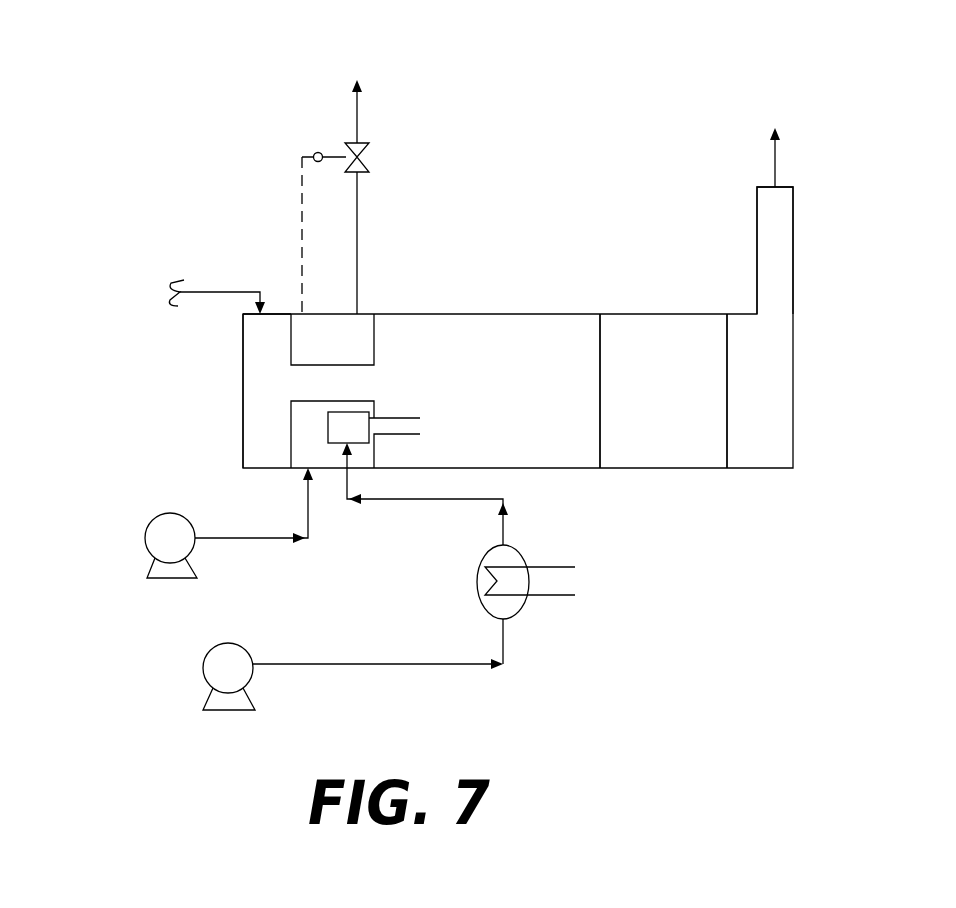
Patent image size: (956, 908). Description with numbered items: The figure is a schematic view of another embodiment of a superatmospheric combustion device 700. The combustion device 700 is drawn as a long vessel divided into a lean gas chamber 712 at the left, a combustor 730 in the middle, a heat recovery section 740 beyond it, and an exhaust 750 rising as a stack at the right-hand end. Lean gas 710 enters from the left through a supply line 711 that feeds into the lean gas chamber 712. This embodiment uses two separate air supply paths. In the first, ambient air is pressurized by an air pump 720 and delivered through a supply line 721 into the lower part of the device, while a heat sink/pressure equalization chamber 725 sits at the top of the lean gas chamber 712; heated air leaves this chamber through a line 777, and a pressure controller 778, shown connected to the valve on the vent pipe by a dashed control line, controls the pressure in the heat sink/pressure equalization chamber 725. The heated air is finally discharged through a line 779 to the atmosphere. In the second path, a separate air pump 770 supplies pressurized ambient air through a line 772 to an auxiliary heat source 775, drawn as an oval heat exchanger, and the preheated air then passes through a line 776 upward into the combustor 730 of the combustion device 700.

The combustion device 700 is at (600, 314).
The lean gas 710 is at (132, 292).
The supply line 711 is at (202, 292).
The lean gas chamber 712 is at (253, 352).
The air pump 720 is at (148, 566).
The supply line 721 is at (252, 536).
The heat sink/pressure equalization chamber 725 is at (365, 318).
The combustor 730 is at (507, 394).
The heat recovery section 740 is at (688, 394).
The exhaust 750 is at (776, 190).
The air pump 770 is at (208, 694).
The line 772 is at (307, 664).
The auxiliary heat source 775 is at (567, 580).
The line 776 is at (505, 525).
The line 777 is at (357, 185).
The pressure controller 778 is at (315, 154).
The line 779 is at (357, 128).